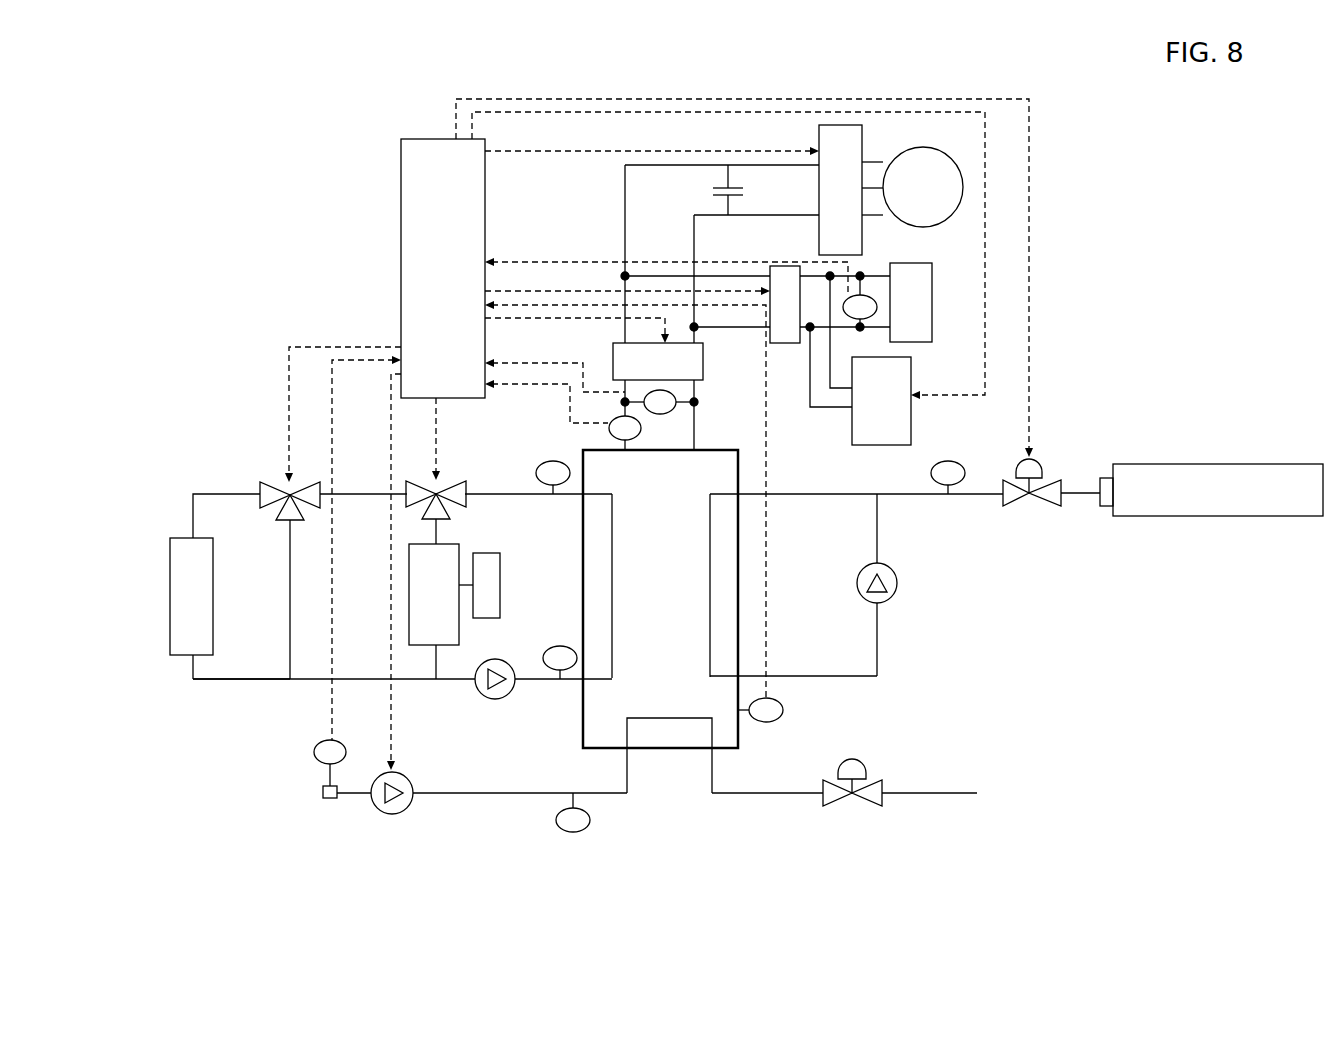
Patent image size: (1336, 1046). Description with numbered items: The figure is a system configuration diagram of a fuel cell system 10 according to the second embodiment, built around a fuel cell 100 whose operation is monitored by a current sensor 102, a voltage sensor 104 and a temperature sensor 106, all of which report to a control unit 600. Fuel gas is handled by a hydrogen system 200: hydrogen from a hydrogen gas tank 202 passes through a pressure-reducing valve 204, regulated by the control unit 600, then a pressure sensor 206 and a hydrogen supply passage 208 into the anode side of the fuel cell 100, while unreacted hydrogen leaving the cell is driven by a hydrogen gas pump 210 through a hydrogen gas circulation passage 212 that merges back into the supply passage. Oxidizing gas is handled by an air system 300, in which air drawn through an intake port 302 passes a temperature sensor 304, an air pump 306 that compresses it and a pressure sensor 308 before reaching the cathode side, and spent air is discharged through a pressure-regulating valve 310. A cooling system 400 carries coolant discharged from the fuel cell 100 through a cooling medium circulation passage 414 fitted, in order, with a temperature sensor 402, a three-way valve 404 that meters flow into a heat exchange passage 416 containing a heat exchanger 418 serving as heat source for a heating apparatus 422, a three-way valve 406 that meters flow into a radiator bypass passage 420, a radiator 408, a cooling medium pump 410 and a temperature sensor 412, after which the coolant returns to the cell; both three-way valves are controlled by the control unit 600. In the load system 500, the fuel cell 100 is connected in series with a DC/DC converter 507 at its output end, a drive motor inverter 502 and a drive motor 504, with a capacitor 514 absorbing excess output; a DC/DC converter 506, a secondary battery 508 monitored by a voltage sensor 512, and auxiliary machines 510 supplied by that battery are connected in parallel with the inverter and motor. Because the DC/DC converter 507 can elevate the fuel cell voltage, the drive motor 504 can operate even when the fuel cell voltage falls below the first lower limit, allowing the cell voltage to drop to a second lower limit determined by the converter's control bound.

The fuel cell system 10 is at (224, 91).
The fuel cell 100 is at (583, 715).
The current sensor 102 is at (641, 428).
The voltage sensor 104 is at (676, 405).
The temperature sensor 106 is at (783, 712).
The hydrogen system 200 is at (1107, 653).
The hydrogen gas tank 202 is at (1218, 516).
The pressure-reducing valve 204 is at (1048, 502).
The pressure sensor 206 is at (955, 485).
The hydrogen supply passage 208 is at (800, 495).
The hydrogen gas pump 210 is at (897, 590).
The hydrogen gas circulation passage 212 is at (877, 650).
The air system 300 is at (650, 836).
The intake port 302 is at (330, 800).
The temperature sensor 304 is at (314, 752).
The air pump 306 is at (395, 814).
The pressure sensor 308 is at (556, 820).
The pressure-regulating valve 310 is at (845, 800).
The cooling system 400 is at (201, 472).
The temperature sensor 402 is at (550, 460).
The three-way valve 404 is at (450, 482).
The three-way valve 406 is at (278, 484).
The radiator 408 is at (213, 590).
The cooling medium pump 410 is at (490, 698).
The temperature sensor 412 is at (555, 645).
The cooling medium circulation passage 414 is at (235, 680).
The heat exchange passage 416 is at (438, 654).
The heat exchanger 418 is at (455, 548).
The radiator bypass passage 420 is at (290, 605).
The heating apparatus 422 is at (500, 575).
The load system 500 is at (1057, 261).
The drive motor inverter 502 is at (862, 150).
The drive motor 504 is at (935, 226).
The DC/DC converter 506 is at (778, 343).
The DC/DC converter 507 is at (703, 362).
The secondary battery 508 is at (932, 325).
The auxiliary machines 510 is at (860, 445).
The voltage sensor 512 is at (864, 295).
The capacitor 514 is at (713, 192).
The control unit 600 is at (401, 270).